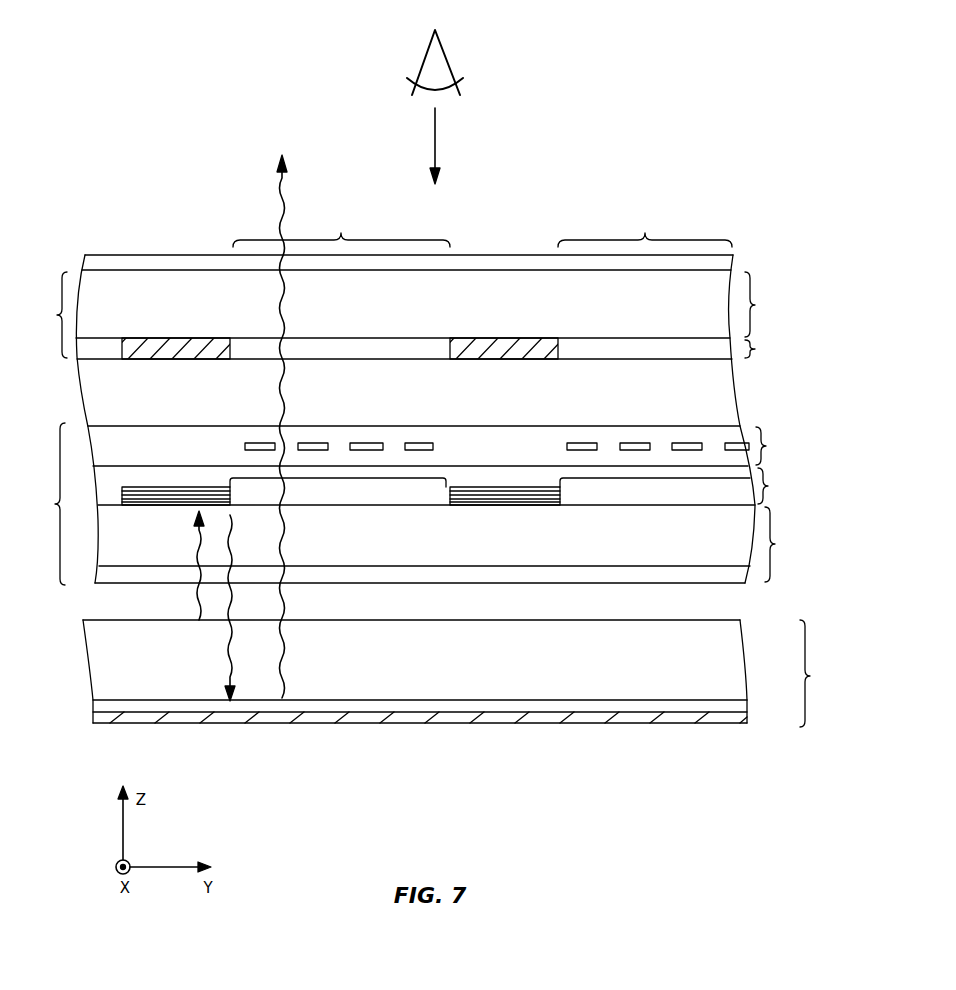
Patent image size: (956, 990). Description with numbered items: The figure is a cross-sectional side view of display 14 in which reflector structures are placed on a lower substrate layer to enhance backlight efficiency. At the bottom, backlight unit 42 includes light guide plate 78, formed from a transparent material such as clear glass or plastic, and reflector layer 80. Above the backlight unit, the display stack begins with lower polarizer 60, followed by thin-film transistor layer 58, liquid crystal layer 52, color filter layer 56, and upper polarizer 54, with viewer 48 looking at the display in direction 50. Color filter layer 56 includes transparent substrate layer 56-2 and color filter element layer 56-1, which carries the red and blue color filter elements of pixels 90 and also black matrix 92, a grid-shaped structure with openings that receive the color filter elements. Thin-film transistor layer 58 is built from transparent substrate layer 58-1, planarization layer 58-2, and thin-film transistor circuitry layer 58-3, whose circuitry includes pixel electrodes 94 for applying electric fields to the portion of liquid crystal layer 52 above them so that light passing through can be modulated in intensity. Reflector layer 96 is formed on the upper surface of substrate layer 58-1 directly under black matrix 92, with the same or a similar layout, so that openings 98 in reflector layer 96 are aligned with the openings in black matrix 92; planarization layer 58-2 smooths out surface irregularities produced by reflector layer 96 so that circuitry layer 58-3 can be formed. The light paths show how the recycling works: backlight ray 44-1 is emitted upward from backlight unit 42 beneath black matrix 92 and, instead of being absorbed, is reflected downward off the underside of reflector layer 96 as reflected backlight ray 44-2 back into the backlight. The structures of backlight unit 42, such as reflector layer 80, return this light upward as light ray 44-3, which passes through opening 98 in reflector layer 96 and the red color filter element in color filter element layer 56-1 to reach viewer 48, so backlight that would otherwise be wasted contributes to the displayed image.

The display 14 is at (583, 159).
The backlight unit 42 is at (459, 673).
The backlight ray 44-1 is at (197, 562).
The reflected backlight ray 44-2 is at (226, 671).
The light ray 44-3 is at (287, 648).
The viewer 48 is at (448, 60).
The direction 50 is at (436, 148).
The liquid crystal layer 52 is at (95, 393).
The upper polarizer 54 is at (118, 265).
The color filter layer 56 is at (50, 315).
The color filter element layer 56-1 is at (435, 350).
The transparent substrate layer 56-2 is at (434, 305).
The thin-film transistor layer 58 is at (44, 504).
The transparent substrate layer 58-1 is at (455, 543).
The planarization layer 58-2 is at (780, 486).
The thin-film transistor circuitry layer 58-3 is at (445, 446).
The lower polarizer 60 is at (735, 573).
The light guide plate 78 is at (733, 660).
The reflector layer 80 is at (458, 723).
The pixel 90 is at (482, 229).
The black matrix 92 is at (170, 350).
The pixel electrodes 94 is at (260, 444).
The reflector layer 96 is at (120, 497).
The openings 98 is at (333, 478).